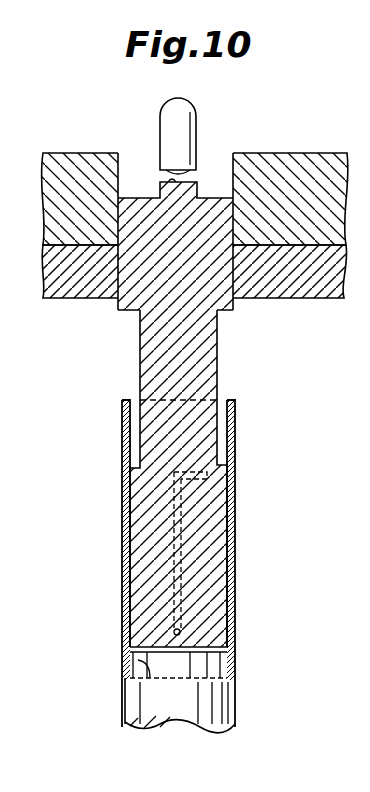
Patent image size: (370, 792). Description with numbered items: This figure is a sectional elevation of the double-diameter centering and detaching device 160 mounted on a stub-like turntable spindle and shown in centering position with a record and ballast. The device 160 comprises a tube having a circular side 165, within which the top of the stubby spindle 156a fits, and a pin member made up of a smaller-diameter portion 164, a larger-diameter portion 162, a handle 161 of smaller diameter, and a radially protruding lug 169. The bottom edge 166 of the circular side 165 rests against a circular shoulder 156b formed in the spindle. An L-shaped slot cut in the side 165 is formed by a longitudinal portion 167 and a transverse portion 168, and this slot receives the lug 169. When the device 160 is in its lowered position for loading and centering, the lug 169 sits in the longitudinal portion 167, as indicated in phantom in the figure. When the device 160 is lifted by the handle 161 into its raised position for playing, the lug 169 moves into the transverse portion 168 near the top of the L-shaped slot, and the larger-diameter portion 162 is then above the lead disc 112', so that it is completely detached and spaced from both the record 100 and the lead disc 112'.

The record 100 is at (320, 284).
The lead disc 112' is at (194, 184).
The stubby spindle 156a is at (212, 647).
The circular shoulder 156b is at (138, 665).
The double-diameter centering and detaching device 160 is at (144, 372).
The handle 161 is at (197, 117).
The larger-diameter portion 162 is at (235, 306).
The smaller-diameter portion 164 is at (217, 358).
The circular side 165 is at (235, 432).
The bottom edge 166 is at (237, 680).
The longitudinal portion 167 is at (172, 533).
The transverse portion 168 is at (207, 478).
The lug 169 is at (181, 630).